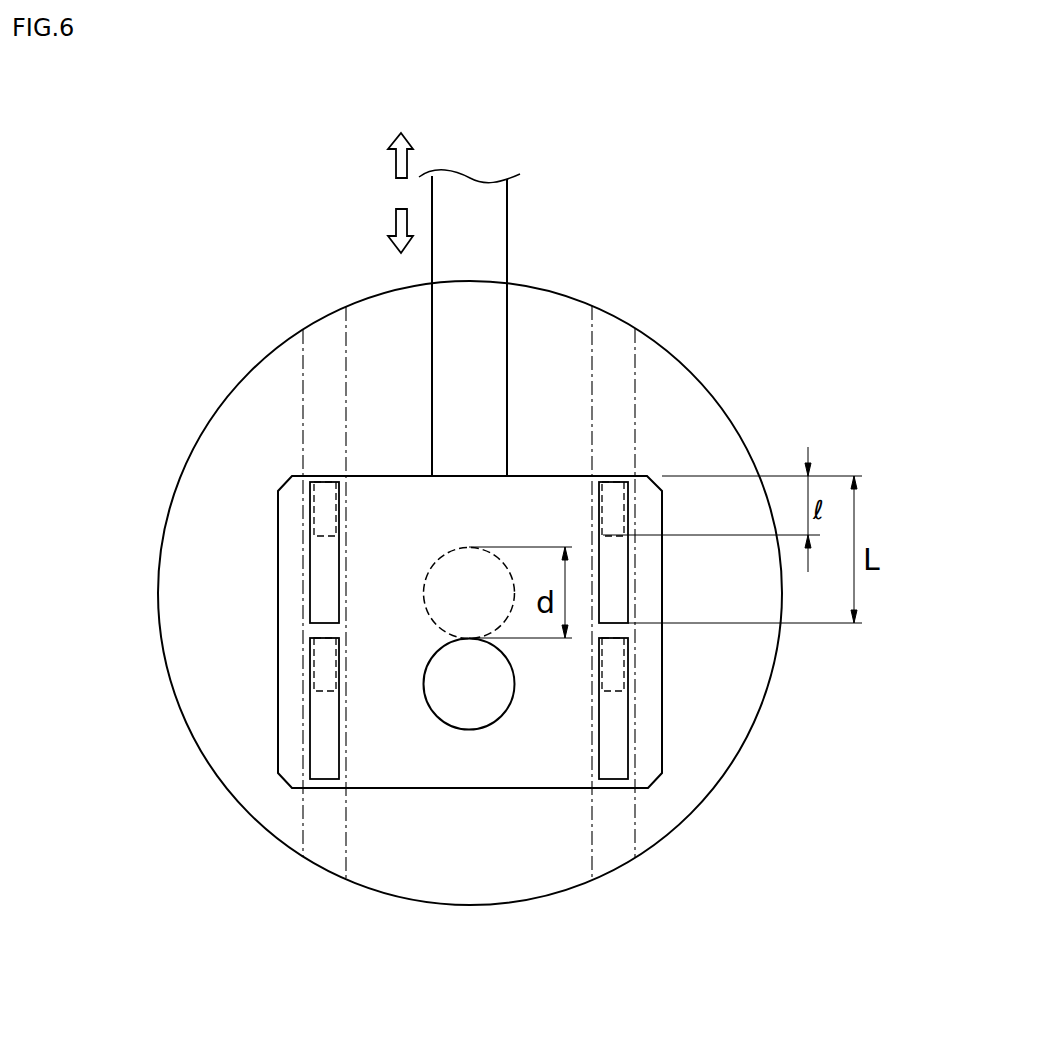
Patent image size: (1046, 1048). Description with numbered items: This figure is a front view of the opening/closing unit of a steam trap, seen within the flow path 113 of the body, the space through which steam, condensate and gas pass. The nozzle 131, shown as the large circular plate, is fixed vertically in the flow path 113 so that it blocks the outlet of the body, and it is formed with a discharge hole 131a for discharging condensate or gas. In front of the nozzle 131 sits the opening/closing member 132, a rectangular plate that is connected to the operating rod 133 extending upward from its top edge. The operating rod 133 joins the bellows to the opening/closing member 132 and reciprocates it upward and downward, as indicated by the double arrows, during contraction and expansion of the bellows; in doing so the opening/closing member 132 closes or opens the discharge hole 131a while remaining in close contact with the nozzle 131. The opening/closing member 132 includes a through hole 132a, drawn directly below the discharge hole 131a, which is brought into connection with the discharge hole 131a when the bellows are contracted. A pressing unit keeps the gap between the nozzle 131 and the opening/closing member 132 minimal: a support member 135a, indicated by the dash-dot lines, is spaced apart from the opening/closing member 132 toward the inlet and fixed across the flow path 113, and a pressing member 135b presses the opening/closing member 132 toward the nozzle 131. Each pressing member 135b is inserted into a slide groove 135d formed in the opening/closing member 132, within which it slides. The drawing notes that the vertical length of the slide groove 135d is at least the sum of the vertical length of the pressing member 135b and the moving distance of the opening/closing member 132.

The flow path 113 is at (755, 778).
The nozzle 131 is at (697, 372).
The discharge hole 131a is at (453, 632).
The opening/closing member 132 is at (278, 677).
The through hole 132a is at (468, 728).
The operating rod 133 is at (490, 226).
The support member 135a is at (304, 400).
The pressing member 135b is at (313, 500).
The slide groove 135d is at (313, 537).